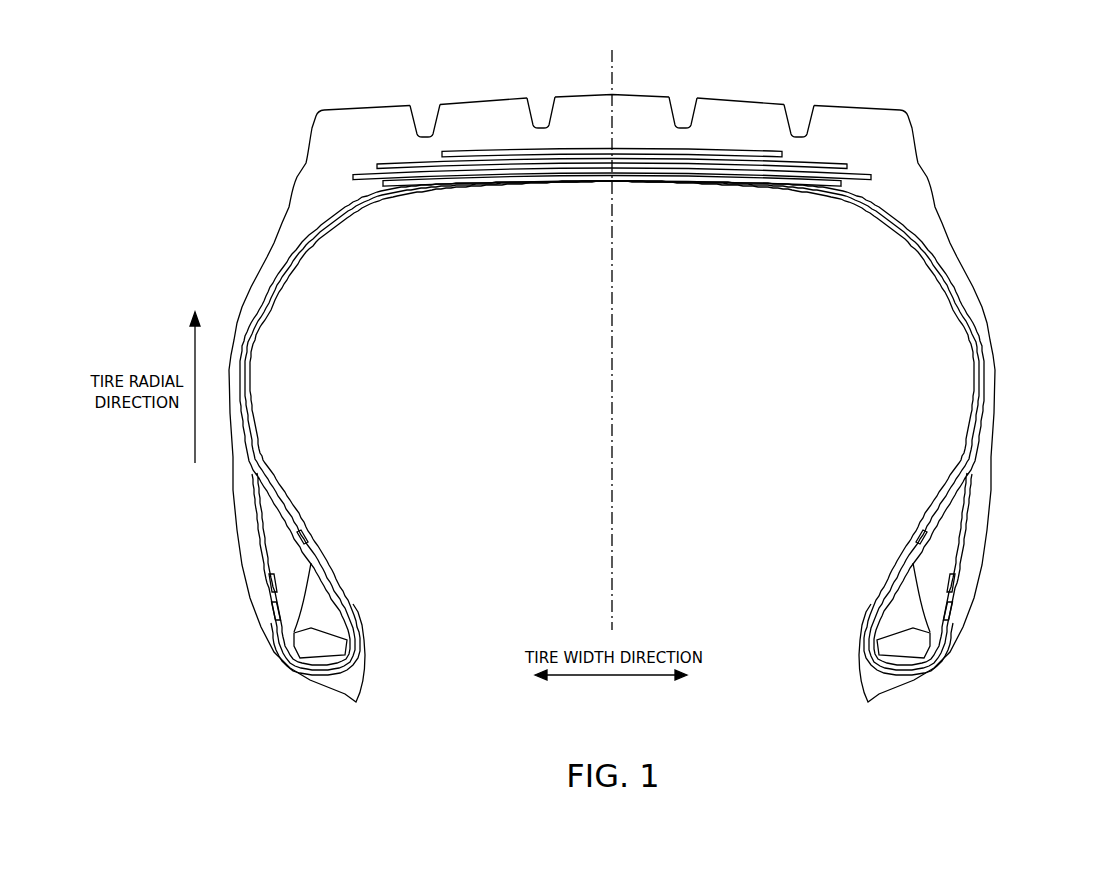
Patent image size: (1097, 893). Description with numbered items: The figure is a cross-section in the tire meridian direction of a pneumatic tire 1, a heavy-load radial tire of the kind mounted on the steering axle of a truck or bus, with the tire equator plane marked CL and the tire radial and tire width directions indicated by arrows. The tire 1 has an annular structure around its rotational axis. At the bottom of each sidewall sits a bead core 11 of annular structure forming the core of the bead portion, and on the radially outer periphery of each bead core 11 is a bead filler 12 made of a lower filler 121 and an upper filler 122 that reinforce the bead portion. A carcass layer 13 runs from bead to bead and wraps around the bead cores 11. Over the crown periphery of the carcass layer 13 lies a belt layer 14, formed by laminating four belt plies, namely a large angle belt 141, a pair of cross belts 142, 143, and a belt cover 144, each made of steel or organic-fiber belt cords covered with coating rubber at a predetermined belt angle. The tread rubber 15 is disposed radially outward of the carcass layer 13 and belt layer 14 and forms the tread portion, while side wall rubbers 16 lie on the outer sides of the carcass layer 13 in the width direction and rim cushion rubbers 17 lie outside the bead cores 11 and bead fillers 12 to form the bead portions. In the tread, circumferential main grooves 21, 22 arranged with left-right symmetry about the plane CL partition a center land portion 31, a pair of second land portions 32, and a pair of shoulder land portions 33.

The pneumatic tire 1 is at (952, 90).
The bead core 11 is at (313, 642).
The bead filler 12 is at (180, 553).
The lower filler 121 is at (315, 593).
The upper filler 122 is at (280, 562).
The carcass layer 13 is at (903, 234).
The belt layer 14 is at (705, 243).
The large angle belt 141 is at (831, 184).
The cross belt 142 is at (797, 176).
The cross belt 143 is at (760, 166).
The belt cover 144 is at (722, 158).
The tread rubber 15 is at (899, 109).
The side wall rubber 16 is at (290, 212).
The rim cushion rubber 17 is at (267, 618).
The circumferential main groove 21 is at (540, 106).
The circumferential main groove 22 is at (423, 112).
The center land portion 31 is at (643, 94).
The second land portion 32 is at (482, 101).
The shoulder land portion 33 is at (338, 108).